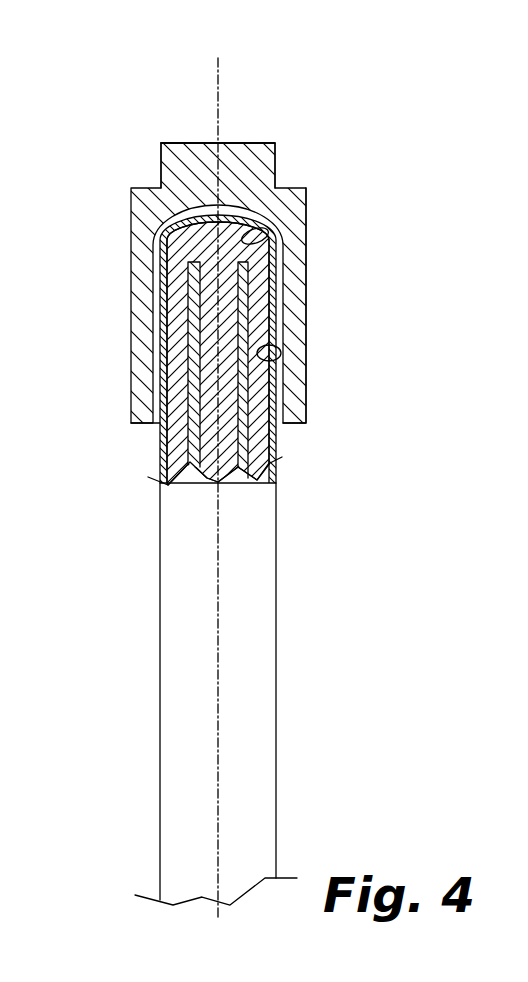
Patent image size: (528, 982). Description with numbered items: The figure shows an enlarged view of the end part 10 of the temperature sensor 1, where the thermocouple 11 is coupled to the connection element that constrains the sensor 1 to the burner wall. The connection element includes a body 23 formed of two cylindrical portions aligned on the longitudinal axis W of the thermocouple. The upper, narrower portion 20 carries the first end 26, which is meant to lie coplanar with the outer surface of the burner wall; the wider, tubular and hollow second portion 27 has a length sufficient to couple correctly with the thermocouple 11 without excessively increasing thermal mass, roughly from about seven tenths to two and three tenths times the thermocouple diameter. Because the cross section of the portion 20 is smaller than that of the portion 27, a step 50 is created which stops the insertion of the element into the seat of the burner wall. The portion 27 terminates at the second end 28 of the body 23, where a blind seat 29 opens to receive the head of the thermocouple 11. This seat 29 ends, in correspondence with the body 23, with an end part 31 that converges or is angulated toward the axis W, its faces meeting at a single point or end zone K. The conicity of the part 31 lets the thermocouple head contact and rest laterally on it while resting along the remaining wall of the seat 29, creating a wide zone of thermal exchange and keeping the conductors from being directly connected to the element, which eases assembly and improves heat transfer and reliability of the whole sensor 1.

The temperature sensor 1 is at (401, 152).
The end part 10 is at (117, 134).
The thermocouple 11 is at (292, 530).
The first portion 20 is at (157, 203).
The body 23 is at (309, 414).
The first end 26 is at (232, 143).
The second portion 27 is at (143, 354).
The second end 28 is at (143, 423).
The seat or blind hole 29 is at (281, 362).
The end part 31 is at (268, 233).
The step 50 is at (290, 188).
The end zone K is at (188, 143).
The longitudinal axis W is at (216, 66).